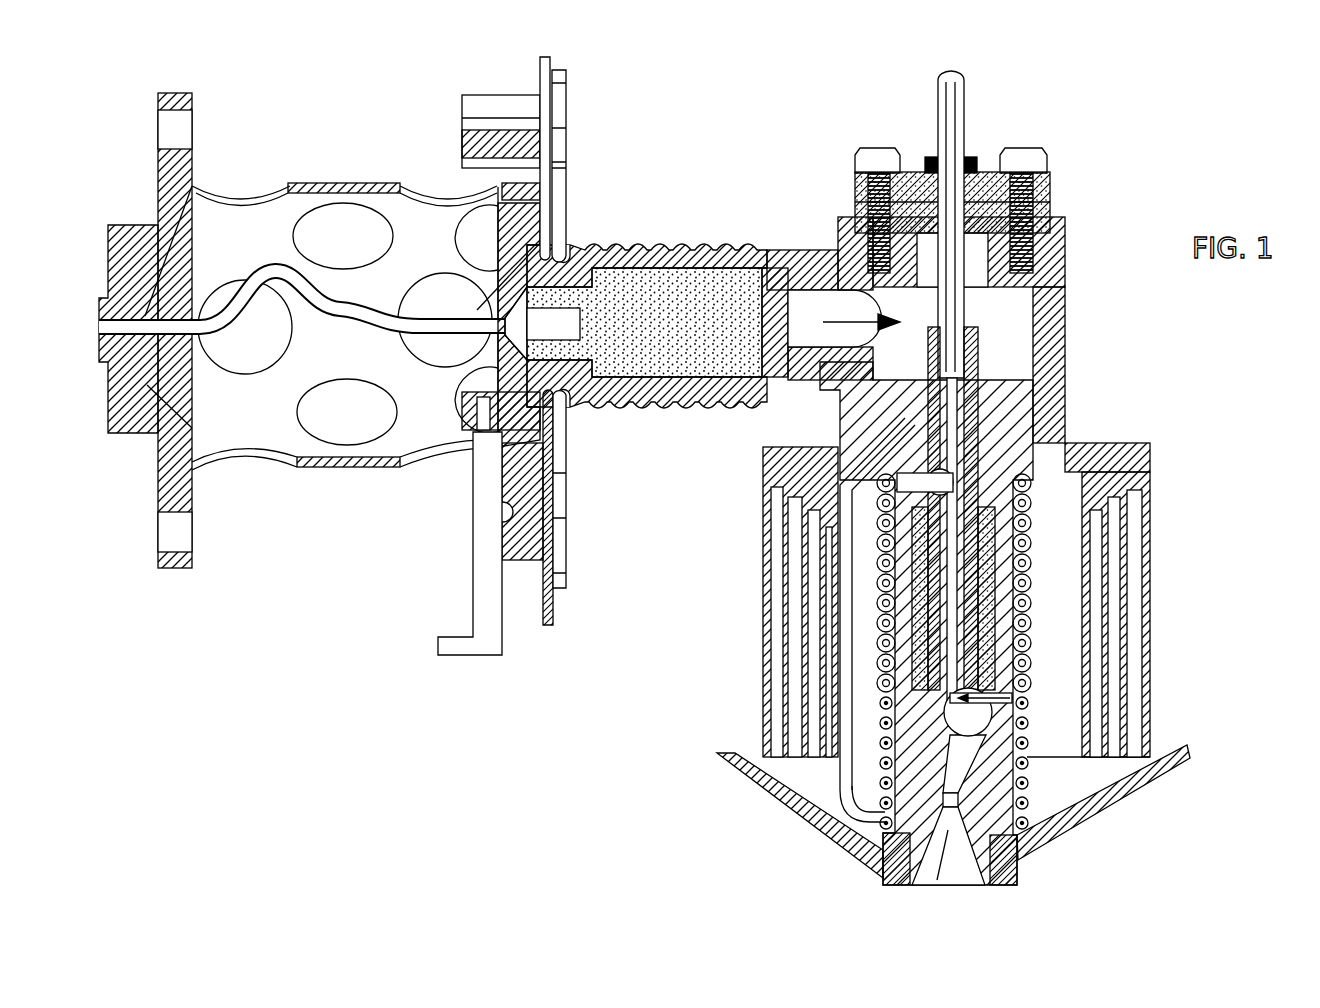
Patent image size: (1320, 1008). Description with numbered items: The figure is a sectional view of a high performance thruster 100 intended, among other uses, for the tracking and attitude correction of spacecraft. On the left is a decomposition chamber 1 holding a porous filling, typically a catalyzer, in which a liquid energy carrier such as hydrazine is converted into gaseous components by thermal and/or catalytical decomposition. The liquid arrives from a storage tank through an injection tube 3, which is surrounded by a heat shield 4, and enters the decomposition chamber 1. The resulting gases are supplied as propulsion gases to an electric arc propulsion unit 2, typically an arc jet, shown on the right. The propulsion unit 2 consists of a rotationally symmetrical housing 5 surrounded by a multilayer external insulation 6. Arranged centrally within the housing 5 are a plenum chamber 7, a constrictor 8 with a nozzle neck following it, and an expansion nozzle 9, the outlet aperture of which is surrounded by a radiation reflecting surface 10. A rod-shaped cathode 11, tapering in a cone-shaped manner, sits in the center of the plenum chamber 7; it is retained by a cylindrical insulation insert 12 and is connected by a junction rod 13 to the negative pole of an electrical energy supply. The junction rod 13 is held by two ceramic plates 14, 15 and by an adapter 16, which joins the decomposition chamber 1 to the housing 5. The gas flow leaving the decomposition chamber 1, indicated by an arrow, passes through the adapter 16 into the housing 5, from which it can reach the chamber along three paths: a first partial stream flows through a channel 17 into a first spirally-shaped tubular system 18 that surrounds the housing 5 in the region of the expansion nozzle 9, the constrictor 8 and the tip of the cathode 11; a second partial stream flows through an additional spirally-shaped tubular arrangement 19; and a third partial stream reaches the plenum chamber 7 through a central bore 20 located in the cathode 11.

The decomposition chamber 1 is at (662, 290).
The electric arc propulsion unit 2 is at (1150, 410).
The injection tube 3 is at (276, 268).
The heat shield 4 is at (356, 466).
The housing 5 is at (913, 848).
The multilayer external insulation 6 is at (1147, 660).
The plenum chamber 7 is at (1075, 770).
The constrictor 8 is at (1030, 845).
The expansion nozzle 9 is at (1017, 862).
The radiation reflecting surface 10 is at (1132, 783).
The cathode 11 is at (1000, 428).
The cylindrical insulation insert 12 is at (998, 576).
The junction rod 13 is at (963, 113).
The ceramic plate 14 is at (1046, 186).
The ceramic plate 15 is at (1067, 221).
The adapter 16 is at (1055, 331).
The channel 17 is at (840, 622).
The first spirally-shaped tubular system 18 is at (893, 722).
The additional spirally-shaped tubular arrangement 19 is at (895, 545).
The central bore 20 is at (1000, 730).
The thruster 100 is at (637, 783).